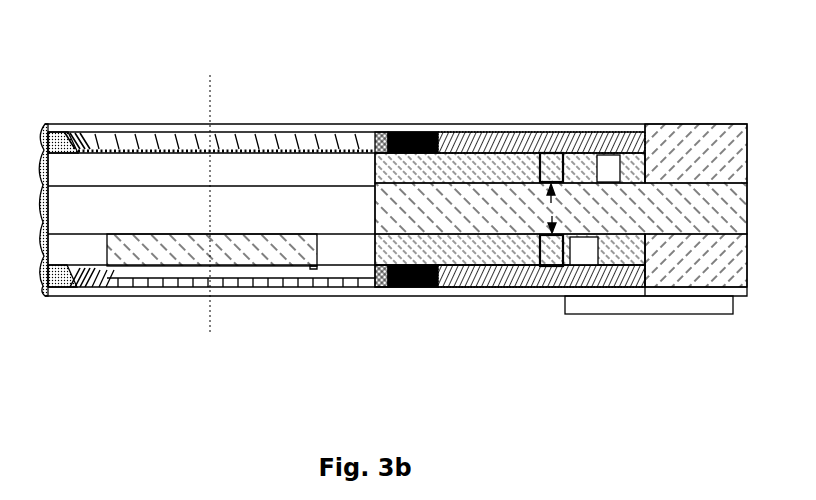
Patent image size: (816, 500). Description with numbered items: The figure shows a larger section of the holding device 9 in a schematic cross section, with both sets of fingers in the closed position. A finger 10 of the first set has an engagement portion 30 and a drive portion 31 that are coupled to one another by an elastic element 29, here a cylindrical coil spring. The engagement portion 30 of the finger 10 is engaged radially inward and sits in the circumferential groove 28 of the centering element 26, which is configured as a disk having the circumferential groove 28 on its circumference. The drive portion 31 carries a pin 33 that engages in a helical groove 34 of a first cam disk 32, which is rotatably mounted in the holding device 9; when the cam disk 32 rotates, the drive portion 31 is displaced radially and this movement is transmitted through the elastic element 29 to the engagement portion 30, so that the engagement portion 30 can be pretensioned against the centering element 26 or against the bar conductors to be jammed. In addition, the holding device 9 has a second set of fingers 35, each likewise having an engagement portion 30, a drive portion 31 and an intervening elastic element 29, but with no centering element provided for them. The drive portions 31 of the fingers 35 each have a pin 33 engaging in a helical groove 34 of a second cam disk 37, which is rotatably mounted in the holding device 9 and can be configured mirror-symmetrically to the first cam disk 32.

The holding device 9 is at (113, 109).
The finger of the first set 10 is at (292, 338).
The centering element 26 is at (190, 272).
The circumferential groove 28 is at (313, 268).
The elastic element 29 is at (417, 124).
The engagement portion 30 is at (376, 124).
The drive portion 31 is at (483, 145).
The first cam disk 32 is at (620, 250).
The pin 33 is at (552, 170).
The helical groove 34 is at (552, 216).
The finger of the second set 35 is at (355, 72).
The second cam disk 37 is at (493, 170).